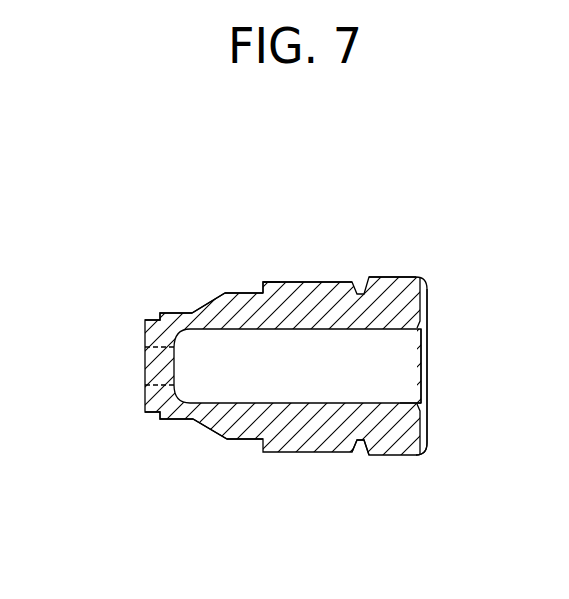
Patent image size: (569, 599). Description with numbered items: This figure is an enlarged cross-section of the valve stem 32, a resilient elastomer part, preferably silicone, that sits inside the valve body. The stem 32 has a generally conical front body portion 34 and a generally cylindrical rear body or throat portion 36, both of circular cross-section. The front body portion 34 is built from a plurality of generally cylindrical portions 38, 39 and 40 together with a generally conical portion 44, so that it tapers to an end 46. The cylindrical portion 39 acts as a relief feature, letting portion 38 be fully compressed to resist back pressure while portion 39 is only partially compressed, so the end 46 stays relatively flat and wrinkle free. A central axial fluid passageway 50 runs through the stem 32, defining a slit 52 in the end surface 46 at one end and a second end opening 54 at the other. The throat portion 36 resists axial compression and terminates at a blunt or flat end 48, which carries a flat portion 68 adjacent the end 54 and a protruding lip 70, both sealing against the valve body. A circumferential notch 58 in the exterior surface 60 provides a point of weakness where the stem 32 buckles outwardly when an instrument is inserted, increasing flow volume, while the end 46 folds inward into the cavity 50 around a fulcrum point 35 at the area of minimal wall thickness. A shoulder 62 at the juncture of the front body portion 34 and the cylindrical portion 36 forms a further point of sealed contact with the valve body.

The valve stem 32 is at (303, 229).
The front body portion 34 is at (192, 429).
The fulcrum point 35 is at (182, 301).
The throat portion 36 is at (403, 277).
The cylindrical portion 38 is at (157, 291).
The cylindrical portion 39 is at (147, 423).
The cylindrical portion 40 is at (247, 440).
The conical portion 44 is at (215, 299).
The end 46 is at (145, 398).
The flat end 48 is at (438, 378).
The central axial fluid passageway 50 is at (297, 347).
The slit 52 is at (145, 348).
The second end opening 54 is at (427, 350).
The circumferential notch 58 is at (362, 441).
The exterior surface 60 is at (320, 282).
The shoulder 62 is at (264, 283).
The flat portion 68 is at (421, 403).
The lip 70 is at (427, 442).